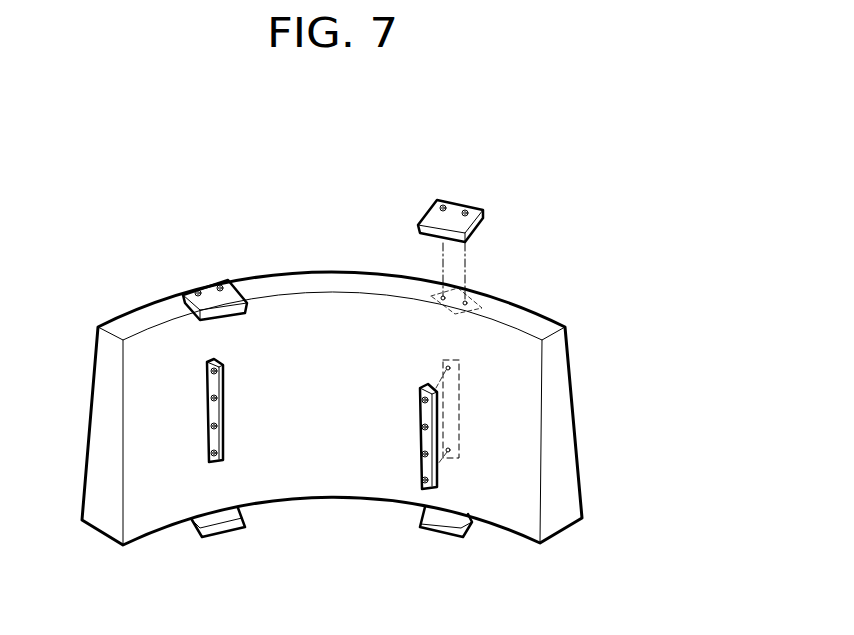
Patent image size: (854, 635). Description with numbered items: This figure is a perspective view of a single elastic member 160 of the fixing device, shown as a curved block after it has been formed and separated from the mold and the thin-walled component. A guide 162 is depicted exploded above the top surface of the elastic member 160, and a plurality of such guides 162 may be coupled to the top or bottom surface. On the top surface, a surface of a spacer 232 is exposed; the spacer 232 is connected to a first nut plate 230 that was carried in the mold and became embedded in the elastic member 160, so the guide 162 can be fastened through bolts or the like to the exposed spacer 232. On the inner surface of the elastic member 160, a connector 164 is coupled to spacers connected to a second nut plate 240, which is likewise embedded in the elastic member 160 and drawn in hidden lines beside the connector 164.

The elastic member 160 is at (517, 360).
The guide 162 is at (456, 207).
The connector 164 is at (423, 442).
The first nut plate 230 is at (473, 300).
The spacer 232 is at (440, 296).
The second nut plate 240 is at (450, 413).